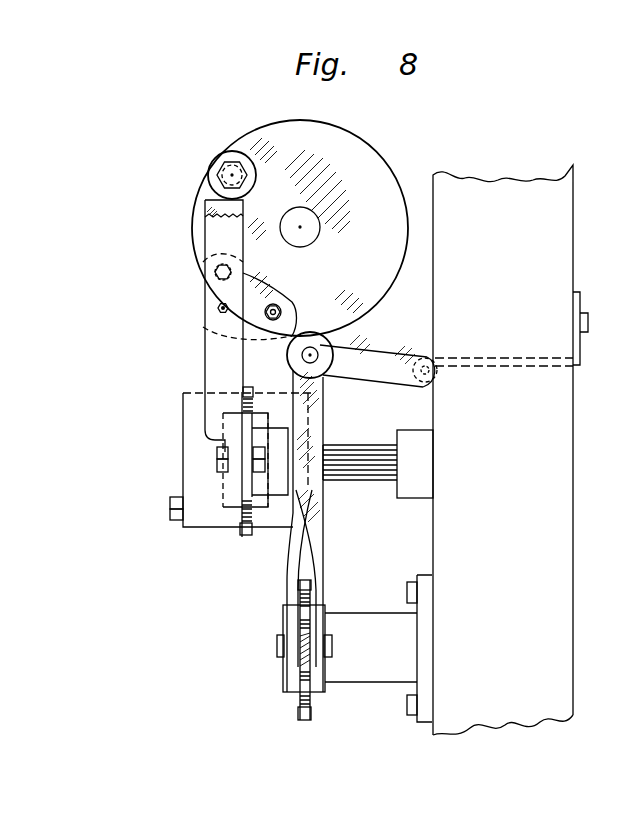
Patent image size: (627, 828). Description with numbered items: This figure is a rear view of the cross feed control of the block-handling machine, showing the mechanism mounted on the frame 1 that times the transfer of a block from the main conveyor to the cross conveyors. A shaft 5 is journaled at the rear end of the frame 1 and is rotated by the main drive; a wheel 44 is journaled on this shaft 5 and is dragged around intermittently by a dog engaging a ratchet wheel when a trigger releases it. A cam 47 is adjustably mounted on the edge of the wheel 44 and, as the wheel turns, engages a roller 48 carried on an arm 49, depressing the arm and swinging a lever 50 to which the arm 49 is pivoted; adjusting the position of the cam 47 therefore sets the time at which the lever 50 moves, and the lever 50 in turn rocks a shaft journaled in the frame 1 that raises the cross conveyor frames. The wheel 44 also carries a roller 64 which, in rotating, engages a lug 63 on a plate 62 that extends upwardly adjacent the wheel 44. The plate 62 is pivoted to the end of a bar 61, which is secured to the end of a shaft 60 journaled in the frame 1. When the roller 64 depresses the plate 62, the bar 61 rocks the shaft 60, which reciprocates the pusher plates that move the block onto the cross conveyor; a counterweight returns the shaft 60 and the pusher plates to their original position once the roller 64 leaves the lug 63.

The frame 1 is at (511, 450).
The shaft 5 is at (305, 232).
The wheel 44 is at (368, 168).
The cam 47 is at (200, 280).
The roller 48 is at (320, 343).
The arm 49 is at (315, 562).
The lever 50 is at (300, 648).
The shaft 60 is at (355, 455).
The bar 61 is at (248, 475).
The plate 62 is at (222, 360).
The lug 63 is at (208, 212).
The roller 64 is at (217, 158).